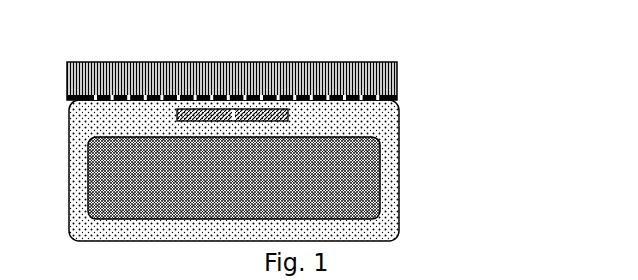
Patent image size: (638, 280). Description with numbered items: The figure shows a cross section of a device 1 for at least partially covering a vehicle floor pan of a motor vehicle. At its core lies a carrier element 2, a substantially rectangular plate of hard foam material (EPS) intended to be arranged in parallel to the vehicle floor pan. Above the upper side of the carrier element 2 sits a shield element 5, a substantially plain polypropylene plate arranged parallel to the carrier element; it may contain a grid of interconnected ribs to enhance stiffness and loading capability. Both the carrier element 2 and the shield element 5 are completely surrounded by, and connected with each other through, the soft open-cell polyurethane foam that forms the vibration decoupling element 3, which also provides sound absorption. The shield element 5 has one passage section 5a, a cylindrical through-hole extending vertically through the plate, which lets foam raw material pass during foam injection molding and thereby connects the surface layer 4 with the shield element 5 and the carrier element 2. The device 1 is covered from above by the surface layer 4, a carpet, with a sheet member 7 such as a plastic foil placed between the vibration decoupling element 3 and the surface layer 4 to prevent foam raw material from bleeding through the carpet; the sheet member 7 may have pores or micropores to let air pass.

The device 1 is at (489, 126).
The carrier element 2 is at (378, 182).
The vibration decoupling element 3 is at (399, 131).
The surface layer 4 is at (398, 66).
The shield element 5 is at (203, 109).
The passage section 5a is at (234, 110).
The sheet member 7 is at (86, 99).